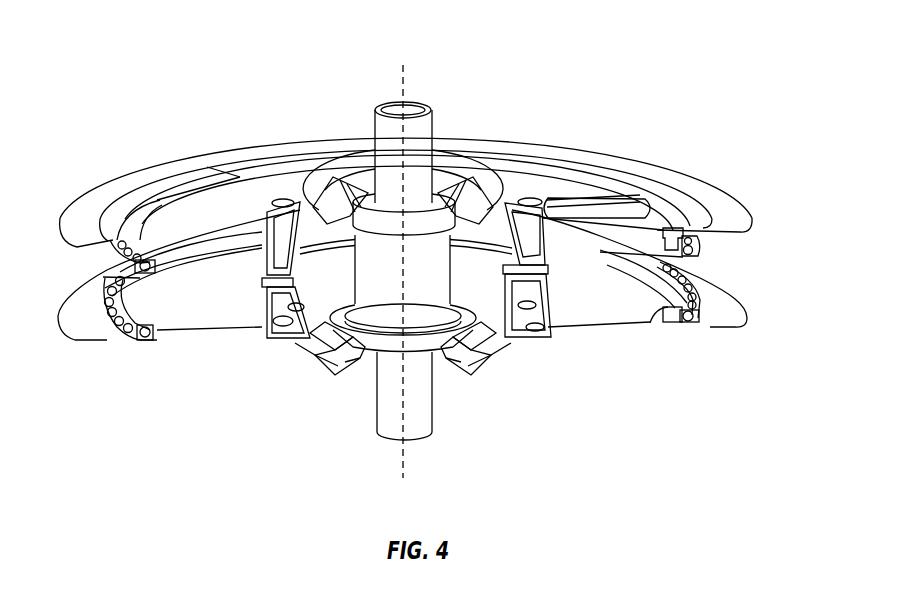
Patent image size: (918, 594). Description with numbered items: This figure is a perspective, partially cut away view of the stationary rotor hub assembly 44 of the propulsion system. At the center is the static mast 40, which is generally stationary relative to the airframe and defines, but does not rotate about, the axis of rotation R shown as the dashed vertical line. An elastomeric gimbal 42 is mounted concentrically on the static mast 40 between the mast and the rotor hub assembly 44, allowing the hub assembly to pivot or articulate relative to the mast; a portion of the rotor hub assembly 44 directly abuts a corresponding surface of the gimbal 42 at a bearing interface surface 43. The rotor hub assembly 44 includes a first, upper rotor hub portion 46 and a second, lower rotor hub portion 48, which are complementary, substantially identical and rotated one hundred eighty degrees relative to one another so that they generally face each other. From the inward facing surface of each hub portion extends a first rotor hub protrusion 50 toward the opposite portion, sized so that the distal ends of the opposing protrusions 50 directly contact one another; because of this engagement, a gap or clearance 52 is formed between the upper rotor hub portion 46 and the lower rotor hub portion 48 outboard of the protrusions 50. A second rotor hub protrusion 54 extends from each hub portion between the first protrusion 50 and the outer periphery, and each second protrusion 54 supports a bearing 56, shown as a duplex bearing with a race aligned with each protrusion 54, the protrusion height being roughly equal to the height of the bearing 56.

The static mast 40 is at (422, 122).
The elastomeric gimbal 42 is at (436, 268).
The bearing interface surface 43 is at (330, 160).
The stationary rotor hub assembly 44 is at (150, 78).
The first, upper rotor hub portion 46 is at (585, 178).
The second, lower rotor hub portion 48 is at (557, 333).
The first rotor hub protrusion 50 is at (278, 243).
The gap or clearance 52 is at (683, 257).
The second rotor hub protrusion 54 is at (670, 228).
The bearing 56 is at (713, 245).